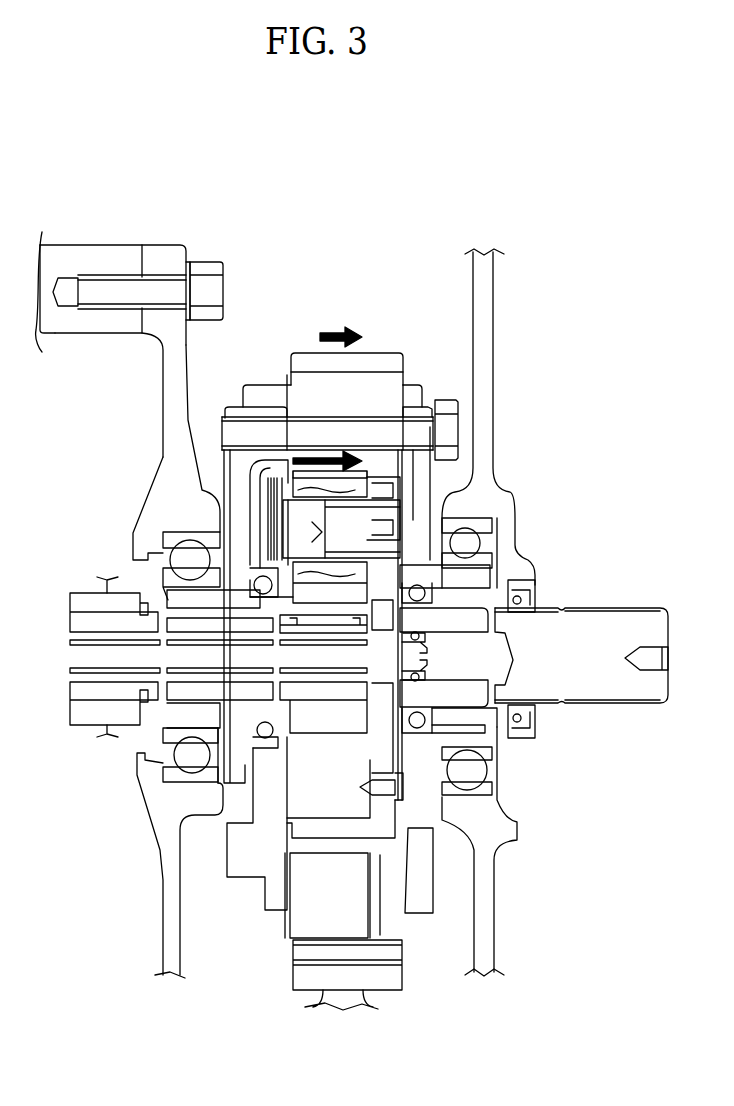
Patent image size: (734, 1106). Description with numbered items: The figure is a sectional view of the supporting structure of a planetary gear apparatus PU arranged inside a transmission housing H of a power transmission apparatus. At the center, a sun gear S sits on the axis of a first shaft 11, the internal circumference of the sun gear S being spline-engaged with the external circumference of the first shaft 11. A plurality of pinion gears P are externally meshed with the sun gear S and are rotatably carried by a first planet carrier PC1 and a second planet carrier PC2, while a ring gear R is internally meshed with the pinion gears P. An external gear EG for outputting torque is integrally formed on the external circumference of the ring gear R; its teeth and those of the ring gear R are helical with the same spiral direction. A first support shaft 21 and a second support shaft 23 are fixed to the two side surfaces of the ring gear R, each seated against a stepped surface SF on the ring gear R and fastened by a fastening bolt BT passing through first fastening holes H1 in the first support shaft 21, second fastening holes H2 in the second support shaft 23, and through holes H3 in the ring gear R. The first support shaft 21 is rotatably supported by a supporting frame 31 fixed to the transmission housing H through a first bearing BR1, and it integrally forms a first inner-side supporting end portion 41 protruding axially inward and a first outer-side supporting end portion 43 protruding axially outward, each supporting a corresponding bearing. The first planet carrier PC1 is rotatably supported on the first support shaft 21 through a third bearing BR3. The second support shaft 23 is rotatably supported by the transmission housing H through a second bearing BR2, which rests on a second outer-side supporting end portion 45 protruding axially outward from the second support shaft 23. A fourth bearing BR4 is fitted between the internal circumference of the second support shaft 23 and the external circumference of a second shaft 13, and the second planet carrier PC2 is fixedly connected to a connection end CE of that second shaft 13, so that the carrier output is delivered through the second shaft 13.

The transmission housing H is at (84, 320).
The first fastening holes H1 is at (232, 428).
The second fastening holes H2 is at (452, 462).
The through holes H3 is at (328, 422).
The external gear EG is at (385, 362).
The planetary gear apparatus PU is at (420, 340).
The stepped surface SF is at (278, 410).
The fastening bolt BT is at (446, 398).
The ring gear R is at (420, 442).
The pinion gears P is at (262, 483).
The first planet carrier PC1 is at (268, 527).
The second planet carrier PC2 is at (395, 555).
The sun gear S is at (290, 590).
The first support shaft 21 is at (250, 500).
The second support shaft 23 is at (422, 492).
The supporting frame 31 is at (163, 470).
The first bearing BR1 is at (192, 557).
The second bearing BR2 is at (470, 540).
The third bearing BR3 is at (260, 585).
The fourth bearing BR4 is at (425, 594).
The first outer-side supporting end portion 43 is at (177, 603).
The first inner-side supporting end portion 41 is at (307, 605).
The first shaft 11 is at (87, 693).
The second outer-side supporting end portion 45 is at (477, 578).
The connection end CE is at (505, 632).
The second shaft 13 is at (595, 685).